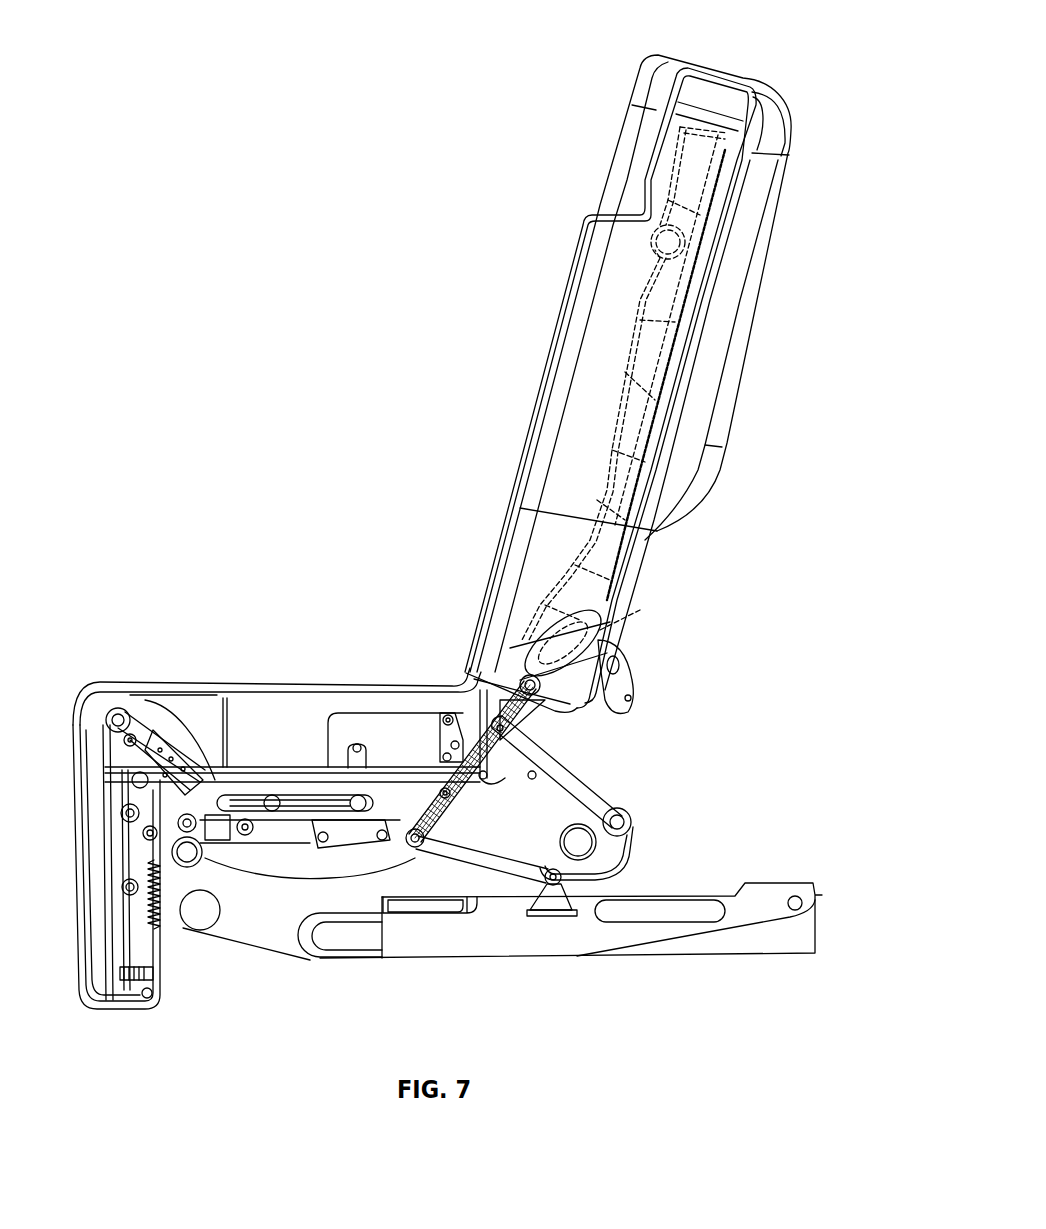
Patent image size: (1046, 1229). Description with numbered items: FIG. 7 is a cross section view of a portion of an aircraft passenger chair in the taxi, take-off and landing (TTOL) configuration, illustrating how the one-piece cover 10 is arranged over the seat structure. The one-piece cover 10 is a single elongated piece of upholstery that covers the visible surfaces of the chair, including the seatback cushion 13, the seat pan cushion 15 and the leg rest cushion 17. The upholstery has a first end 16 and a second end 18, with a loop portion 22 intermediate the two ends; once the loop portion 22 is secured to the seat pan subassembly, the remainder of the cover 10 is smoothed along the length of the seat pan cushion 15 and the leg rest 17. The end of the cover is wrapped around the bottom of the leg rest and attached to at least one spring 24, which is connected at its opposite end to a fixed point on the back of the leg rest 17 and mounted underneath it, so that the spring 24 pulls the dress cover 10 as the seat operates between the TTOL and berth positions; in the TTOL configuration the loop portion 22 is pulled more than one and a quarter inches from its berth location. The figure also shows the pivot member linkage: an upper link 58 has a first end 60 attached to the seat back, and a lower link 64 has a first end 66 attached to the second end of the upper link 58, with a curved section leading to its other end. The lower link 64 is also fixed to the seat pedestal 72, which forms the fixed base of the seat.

The one-piece cover 10 is at (343, 683).
The seatback cushion 13 is at (600, 422).
The seat pan cushion 15 is at (283, 735).
The first end 16 is at (713, 70).
The leg rest cushion 17 is at (100, 873).
The second end 18 is at (162, 923).
The loop portion 22 is at (600, 784).
The spring 24 is at (216, 917).
The upper link 58 is at (537, 723).
The first end 60 is at (524, 679).
The lower link 64 is at (505, 866).
The first end 66 is at (410, 850).
The seat pedestal 72 is at (498, 928).